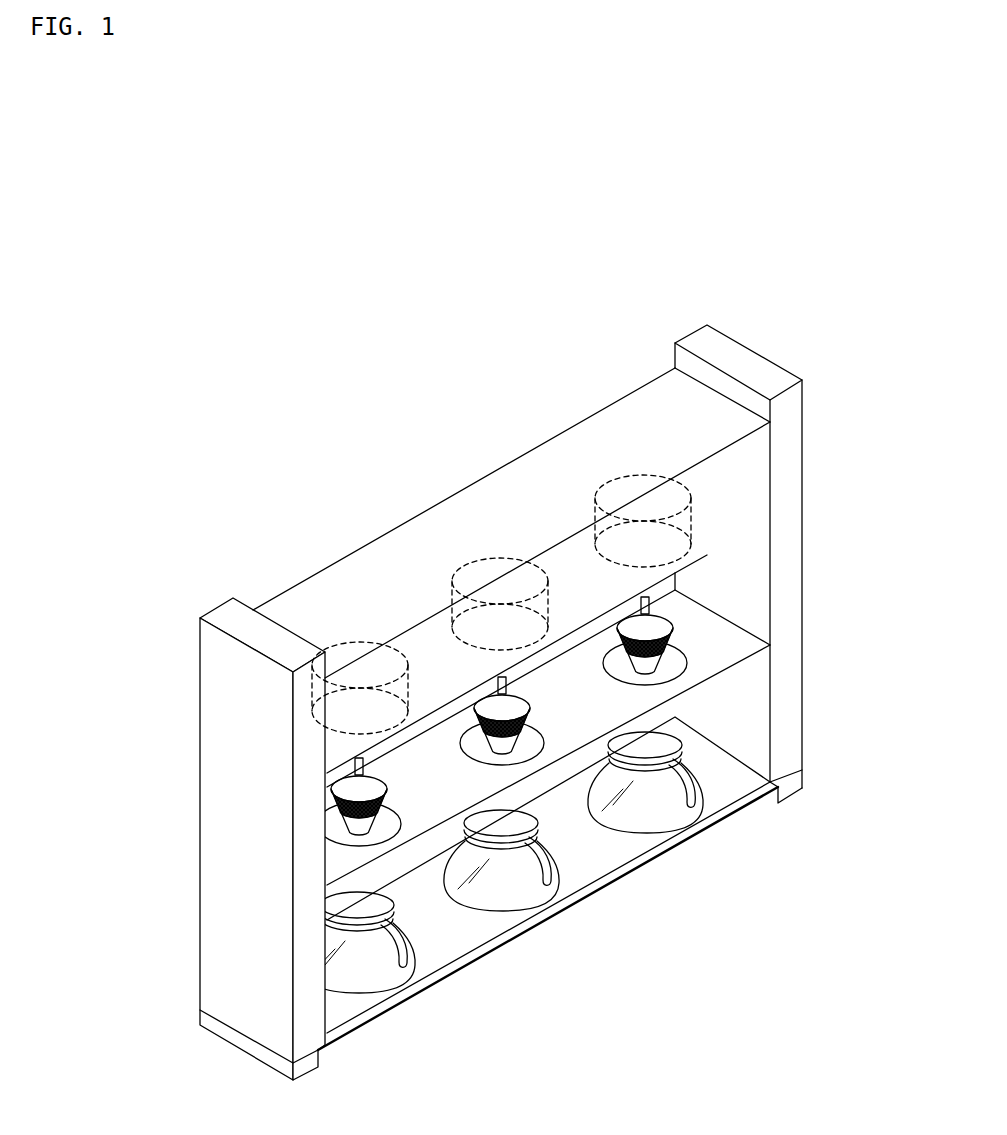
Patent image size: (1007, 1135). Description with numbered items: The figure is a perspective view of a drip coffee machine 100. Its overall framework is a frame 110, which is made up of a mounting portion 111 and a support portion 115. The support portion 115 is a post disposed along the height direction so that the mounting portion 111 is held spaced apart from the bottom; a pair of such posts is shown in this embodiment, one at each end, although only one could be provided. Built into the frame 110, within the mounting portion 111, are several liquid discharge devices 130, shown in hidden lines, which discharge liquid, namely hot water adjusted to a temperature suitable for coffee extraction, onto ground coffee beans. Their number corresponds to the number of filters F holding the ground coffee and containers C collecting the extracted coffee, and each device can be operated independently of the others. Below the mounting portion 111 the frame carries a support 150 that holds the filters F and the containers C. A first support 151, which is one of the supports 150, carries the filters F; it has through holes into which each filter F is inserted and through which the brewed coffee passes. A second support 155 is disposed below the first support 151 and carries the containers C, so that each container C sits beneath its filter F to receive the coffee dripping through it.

The drip coffee machine 100 is at (712, 187).
The frame 110 is at (183, 767).
The mounting portion 111 is at (474, 507).
The support portion 115 is at (222, 873).
The liquid discharge device 130 is at (711, 508).
The support 150 is at (628, 886).
The first support 151 is at (712, 693).
The second support 155 is at (462, 945).
The filter F is at (690, 658).
The container C is at (362, 980).